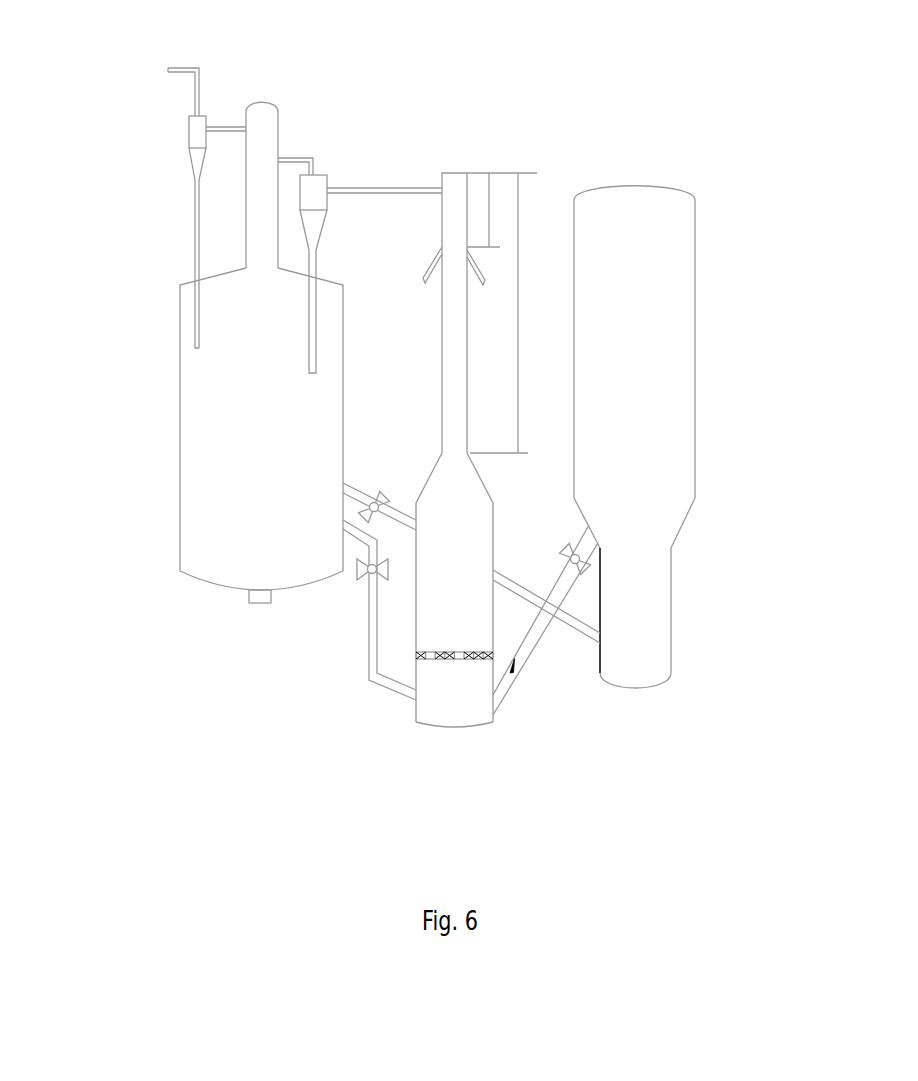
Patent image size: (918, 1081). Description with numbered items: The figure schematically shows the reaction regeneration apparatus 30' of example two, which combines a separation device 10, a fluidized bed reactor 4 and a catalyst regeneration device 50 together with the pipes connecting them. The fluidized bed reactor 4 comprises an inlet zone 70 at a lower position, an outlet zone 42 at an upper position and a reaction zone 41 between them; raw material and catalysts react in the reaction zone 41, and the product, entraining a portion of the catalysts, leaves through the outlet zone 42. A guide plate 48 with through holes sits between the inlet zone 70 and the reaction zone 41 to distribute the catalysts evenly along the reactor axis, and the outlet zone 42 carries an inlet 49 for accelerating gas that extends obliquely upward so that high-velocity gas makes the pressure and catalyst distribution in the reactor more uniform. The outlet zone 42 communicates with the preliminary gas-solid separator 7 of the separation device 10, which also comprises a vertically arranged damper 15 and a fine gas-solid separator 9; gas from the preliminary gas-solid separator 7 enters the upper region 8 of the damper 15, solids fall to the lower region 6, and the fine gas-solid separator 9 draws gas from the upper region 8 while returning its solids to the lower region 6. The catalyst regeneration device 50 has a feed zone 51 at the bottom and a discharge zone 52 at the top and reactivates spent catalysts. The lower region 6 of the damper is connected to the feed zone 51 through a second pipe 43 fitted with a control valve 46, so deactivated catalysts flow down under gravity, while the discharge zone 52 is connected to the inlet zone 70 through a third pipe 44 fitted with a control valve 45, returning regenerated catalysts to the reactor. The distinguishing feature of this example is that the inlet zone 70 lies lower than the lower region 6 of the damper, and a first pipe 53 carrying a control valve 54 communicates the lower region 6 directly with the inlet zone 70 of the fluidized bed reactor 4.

The separation device 10 is at (330, 76).
The upper region of the damper 8 is at (266, 137).
The fine gas-solid separator 9 is at (193, 135).
The preliminary gas-solid separator 7 is at (317, 193).
The reaction regeneration apparatus 30' is at (535, 83).
The outlet zone 42 is at (457, 215).
The inlet for accelerating gas 49 is at (432, 268).
The catalyst regeneration device 50 is at (725, 167).
The damper 15 is at (159, 406).
The lower region of the damper 6 is at (237, 445).
The control valve 46 is at (373, 502).
The control valve 54 is at (368, 578).
The first pipe 53 is at (377, 657).
The guide plate 48 is at (417, 652).
The reaction zone 41 is at (470, 633).
The inlet zone 70 is at (447, 688).
The fluidized bed reactor 4 is at (425, 755).
The second pipe 43 is at (573, 622).
The third pipe 44 is at (555, 588).
The control valve 45 is at (572, 555).
The discharge zone 52 is at (652, 508).
The feed zone 51 is at (643, 611).